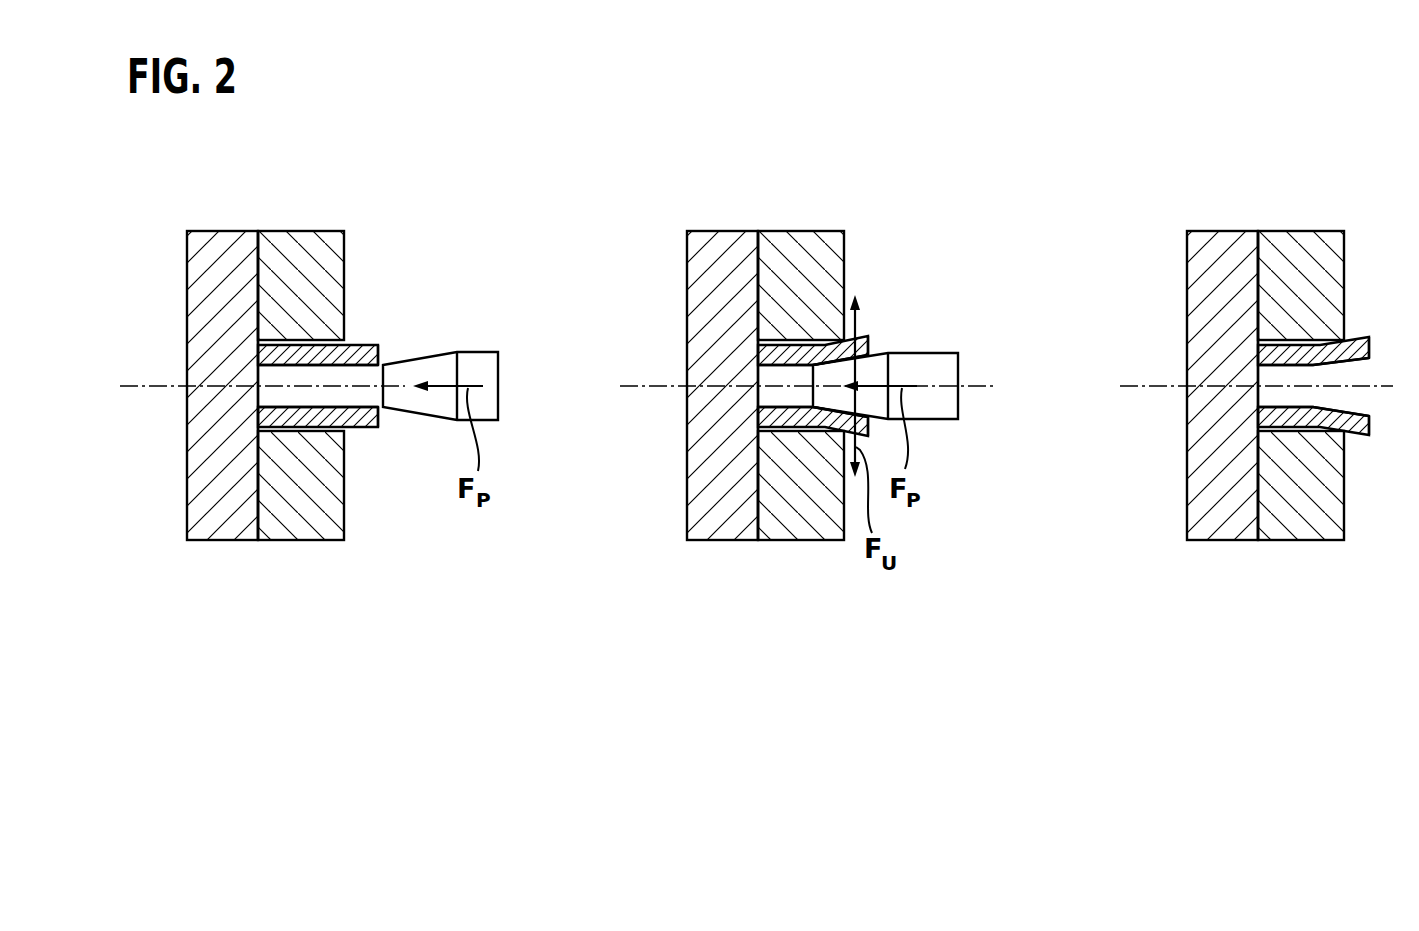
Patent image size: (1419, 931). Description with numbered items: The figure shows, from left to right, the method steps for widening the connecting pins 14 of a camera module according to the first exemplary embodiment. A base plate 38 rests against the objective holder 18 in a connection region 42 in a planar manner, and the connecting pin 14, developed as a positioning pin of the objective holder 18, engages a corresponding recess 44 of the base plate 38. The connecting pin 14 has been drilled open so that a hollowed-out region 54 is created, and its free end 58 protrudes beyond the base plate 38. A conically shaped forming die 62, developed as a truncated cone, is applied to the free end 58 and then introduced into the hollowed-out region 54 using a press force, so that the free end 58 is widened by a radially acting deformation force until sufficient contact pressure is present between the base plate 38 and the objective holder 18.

The objective holder 18 is at (203, 294).
The base plate 38 is at (320, 515).
The connection region 42 is at (260, 495).
The connecting pin 14 is at (270, 355).
The recess 44 is at (289, 430).
The hollowed-out region 54 is at (296, 365).
The free end 58 is at (367, 345).
The forming die 62 is at (475, 365).